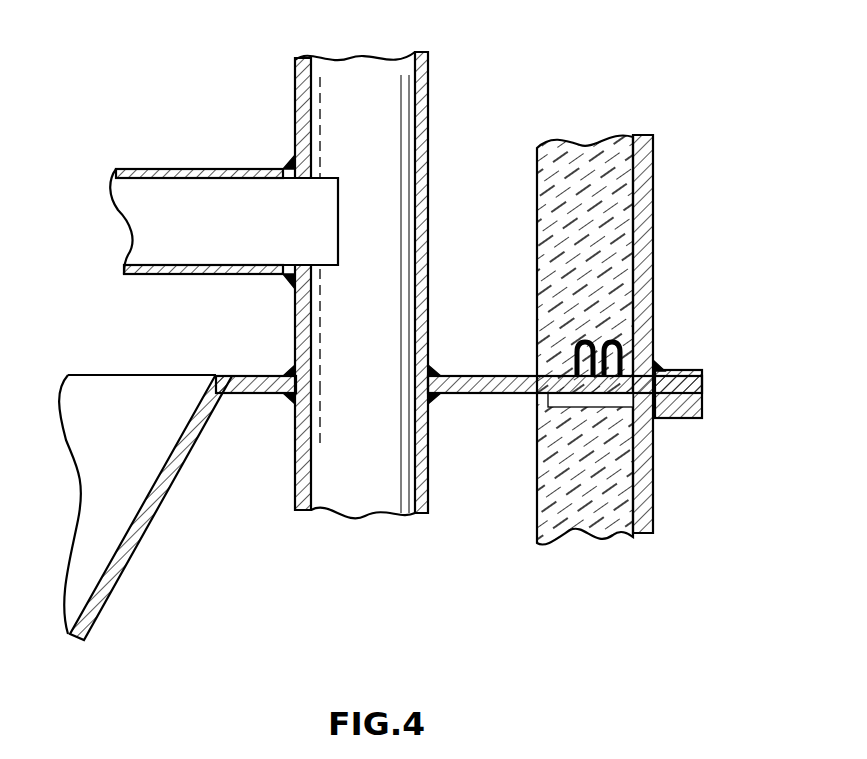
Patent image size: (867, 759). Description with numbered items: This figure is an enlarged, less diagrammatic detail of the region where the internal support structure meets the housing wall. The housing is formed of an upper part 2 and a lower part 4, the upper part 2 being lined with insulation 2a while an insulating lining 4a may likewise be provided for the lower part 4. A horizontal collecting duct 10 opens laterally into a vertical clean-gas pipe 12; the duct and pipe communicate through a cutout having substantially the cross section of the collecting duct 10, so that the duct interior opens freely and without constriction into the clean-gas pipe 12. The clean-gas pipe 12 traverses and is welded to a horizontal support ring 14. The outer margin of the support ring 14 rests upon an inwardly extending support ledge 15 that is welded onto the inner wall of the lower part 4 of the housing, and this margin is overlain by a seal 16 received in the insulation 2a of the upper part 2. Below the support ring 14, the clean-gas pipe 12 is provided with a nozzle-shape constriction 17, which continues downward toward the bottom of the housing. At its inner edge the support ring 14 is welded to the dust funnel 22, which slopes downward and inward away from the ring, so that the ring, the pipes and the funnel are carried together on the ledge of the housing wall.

The upper part 2 is at (643, 160).
The insulation 2a is at (617, 210).
The lower part 4 is at (640, 477).
The insulating lining 4a is at (607, 507).
The collecting duct 10 is at (197, 195).
The clean-gas pipe 12 is at (397, 90).
The support ring 14 is at (458, 376).
The support ledge 15 is at (587, 410).
The seal 16 is at (660, 350).
The nozzle-shape constriction 17 is at (338, 468).
The dust funnel 22 is at (133, 542).